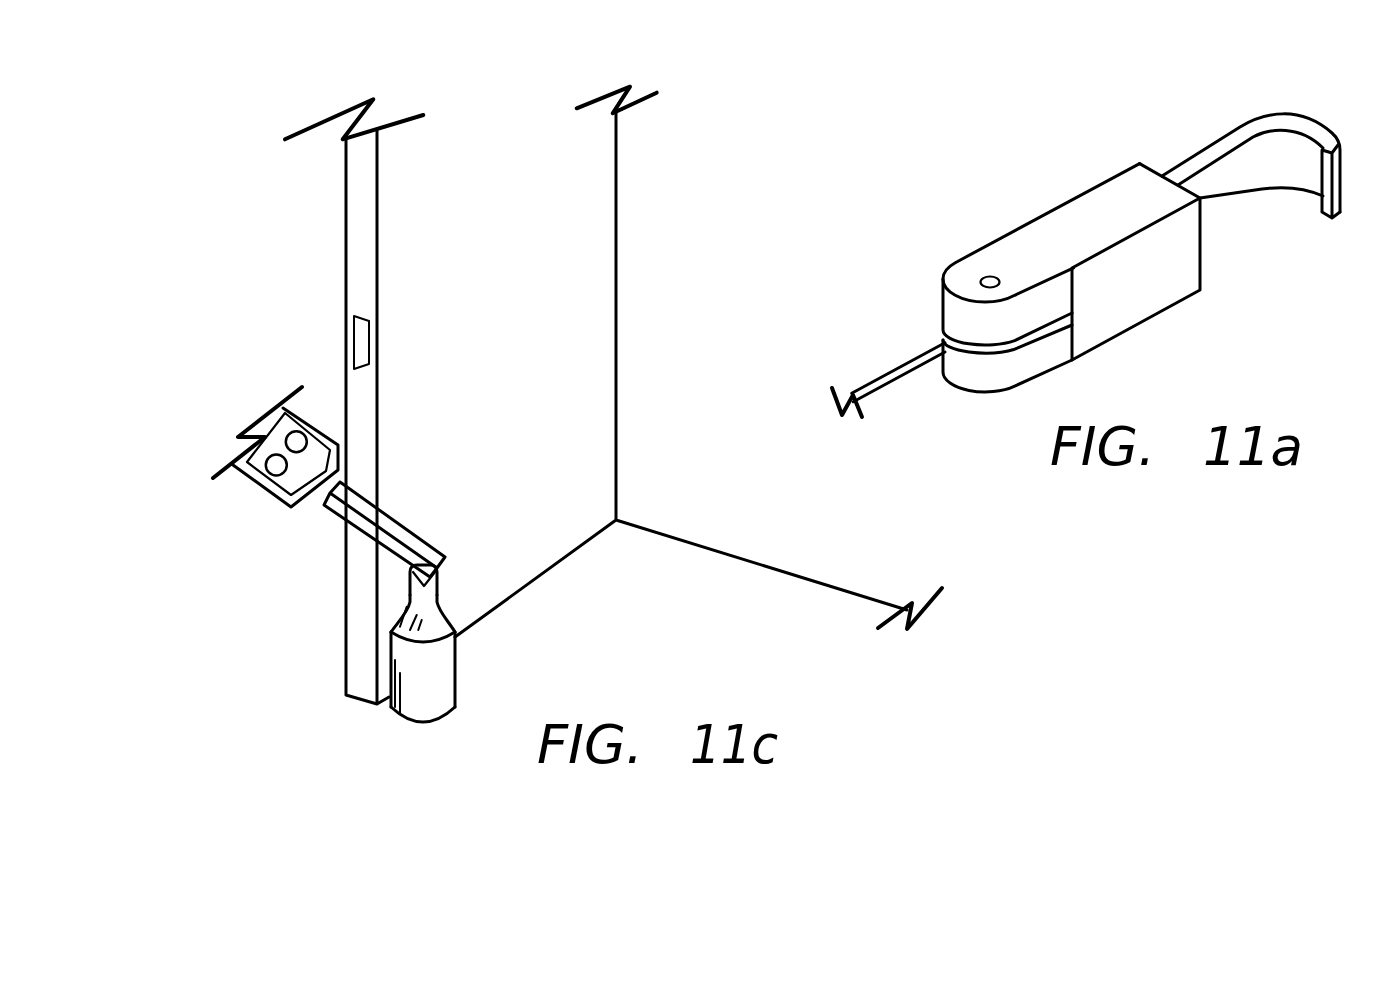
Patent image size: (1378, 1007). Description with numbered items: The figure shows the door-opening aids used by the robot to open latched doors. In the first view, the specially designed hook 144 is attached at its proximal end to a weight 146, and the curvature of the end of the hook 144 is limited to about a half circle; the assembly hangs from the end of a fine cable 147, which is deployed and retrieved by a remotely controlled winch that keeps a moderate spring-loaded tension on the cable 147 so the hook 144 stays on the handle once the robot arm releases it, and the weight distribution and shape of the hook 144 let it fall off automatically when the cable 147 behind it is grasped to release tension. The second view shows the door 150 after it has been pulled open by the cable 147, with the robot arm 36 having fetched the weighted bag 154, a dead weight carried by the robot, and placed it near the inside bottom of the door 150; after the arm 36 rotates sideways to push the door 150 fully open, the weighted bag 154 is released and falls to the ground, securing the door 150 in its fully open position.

In FIG. 11A, the hook 144 is at (1212, 153).
In FIG. 11A, the weight 146 is at (1048, 223).
In FIG. 11A, the fine cable 147 is at (882, 377).
In FIG. 11C, the door 150 is at (357, 302).
In FIG. 11C, the carriage bracket and arm 36 is at (368, 535).
In FIG. 11C, the weighted bag 154 is at (415, 706).